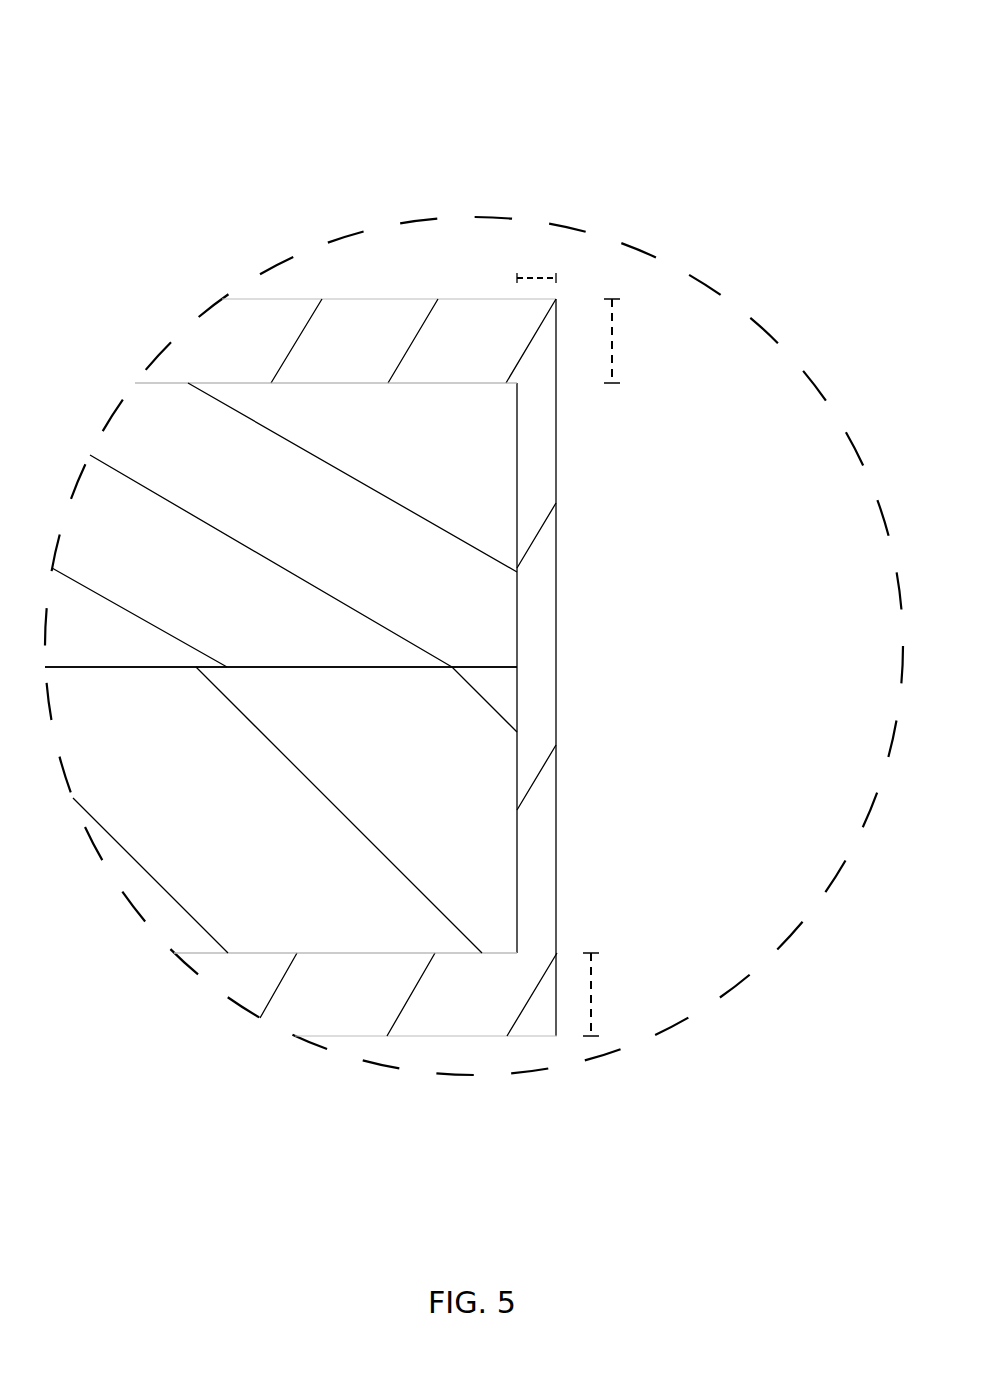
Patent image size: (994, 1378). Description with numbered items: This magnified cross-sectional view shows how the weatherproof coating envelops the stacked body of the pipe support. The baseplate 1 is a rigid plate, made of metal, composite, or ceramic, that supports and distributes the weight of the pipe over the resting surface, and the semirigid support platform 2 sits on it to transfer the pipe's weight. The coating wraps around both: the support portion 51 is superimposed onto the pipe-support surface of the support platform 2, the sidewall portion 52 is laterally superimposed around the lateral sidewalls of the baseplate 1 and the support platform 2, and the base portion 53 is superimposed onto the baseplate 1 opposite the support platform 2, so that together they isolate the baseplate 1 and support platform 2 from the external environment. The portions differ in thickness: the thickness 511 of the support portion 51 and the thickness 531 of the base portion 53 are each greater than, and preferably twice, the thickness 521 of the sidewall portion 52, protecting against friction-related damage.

The baseplate 1 is at (485, 855).
The support platform 2 is at (467, 483).
The support portion 51 is at (338, 322).
The sidewall portion 52 is at (545, 612).
The base portion 53 is at (465, 1023).
The thickness of the support portion 511 is at (639, 341).
The thickness of the sidewall portion 521 is at (539, 257).
The thickness of the base portion 531 is at (620, 994).